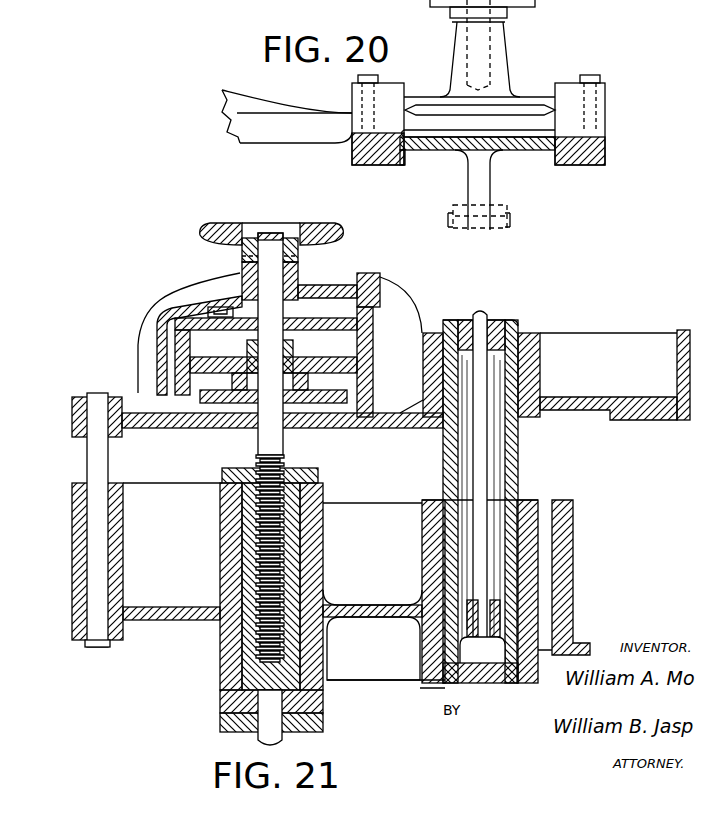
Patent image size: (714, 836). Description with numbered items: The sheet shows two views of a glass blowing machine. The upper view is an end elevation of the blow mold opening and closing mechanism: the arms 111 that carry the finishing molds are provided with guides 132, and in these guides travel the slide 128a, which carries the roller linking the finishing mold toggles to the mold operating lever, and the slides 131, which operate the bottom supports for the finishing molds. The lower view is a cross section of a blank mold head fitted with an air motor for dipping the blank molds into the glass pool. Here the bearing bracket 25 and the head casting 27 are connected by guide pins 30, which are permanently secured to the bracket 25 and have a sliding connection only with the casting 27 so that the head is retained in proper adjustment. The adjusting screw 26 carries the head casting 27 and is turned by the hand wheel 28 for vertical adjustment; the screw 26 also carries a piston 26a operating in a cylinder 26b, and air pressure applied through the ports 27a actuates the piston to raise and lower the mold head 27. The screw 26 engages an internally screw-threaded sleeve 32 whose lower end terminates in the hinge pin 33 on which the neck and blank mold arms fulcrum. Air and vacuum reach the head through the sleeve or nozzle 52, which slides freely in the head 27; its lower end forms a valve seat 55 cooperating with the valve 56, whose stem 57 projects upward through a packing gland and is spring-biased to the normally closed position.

In FIG. 20, the slide 128a is at (522, 100).
In FIG. 20, the guides 132 is at (605, 97).
In FIG. 20, the arms 111 is at (326, 140).
In FIG. 20, the slides 131 is at (468, 185).
In FIG. 21, the hand wheel 28 is at (205, 232).
In FIG. 21, the ports 27a is at (217, 308).
In FIG. 21, the cylinder 26b is at (175, 333).
In FIG. 21, the piston 26a is at (175, 350).
In FIG. 21, the bearing bracket 25 is at (132, 405).
In FIG. 21, the guide pins 30 is at (95, 460).
In FIG. 21, the blank mold head casting 27 is at (78, 520).
In FIG. 21, the adjusting screw 26 is at (258, 443).
In FIG. 21, the internally screw-threaded sleeve 32 is at (322, 503).
In FIG. 21, the stem 57 is at (485, 312).
In FIG. 21, the sleeve or nozzle 52 is at (518, 472).
In FIG. 21, the valve seat 55 is at (455, 660).
In FIG. 21, the valve 56 is at (465, 683).
In FIG. 21, the hinge pin 33 is at (283, 737).